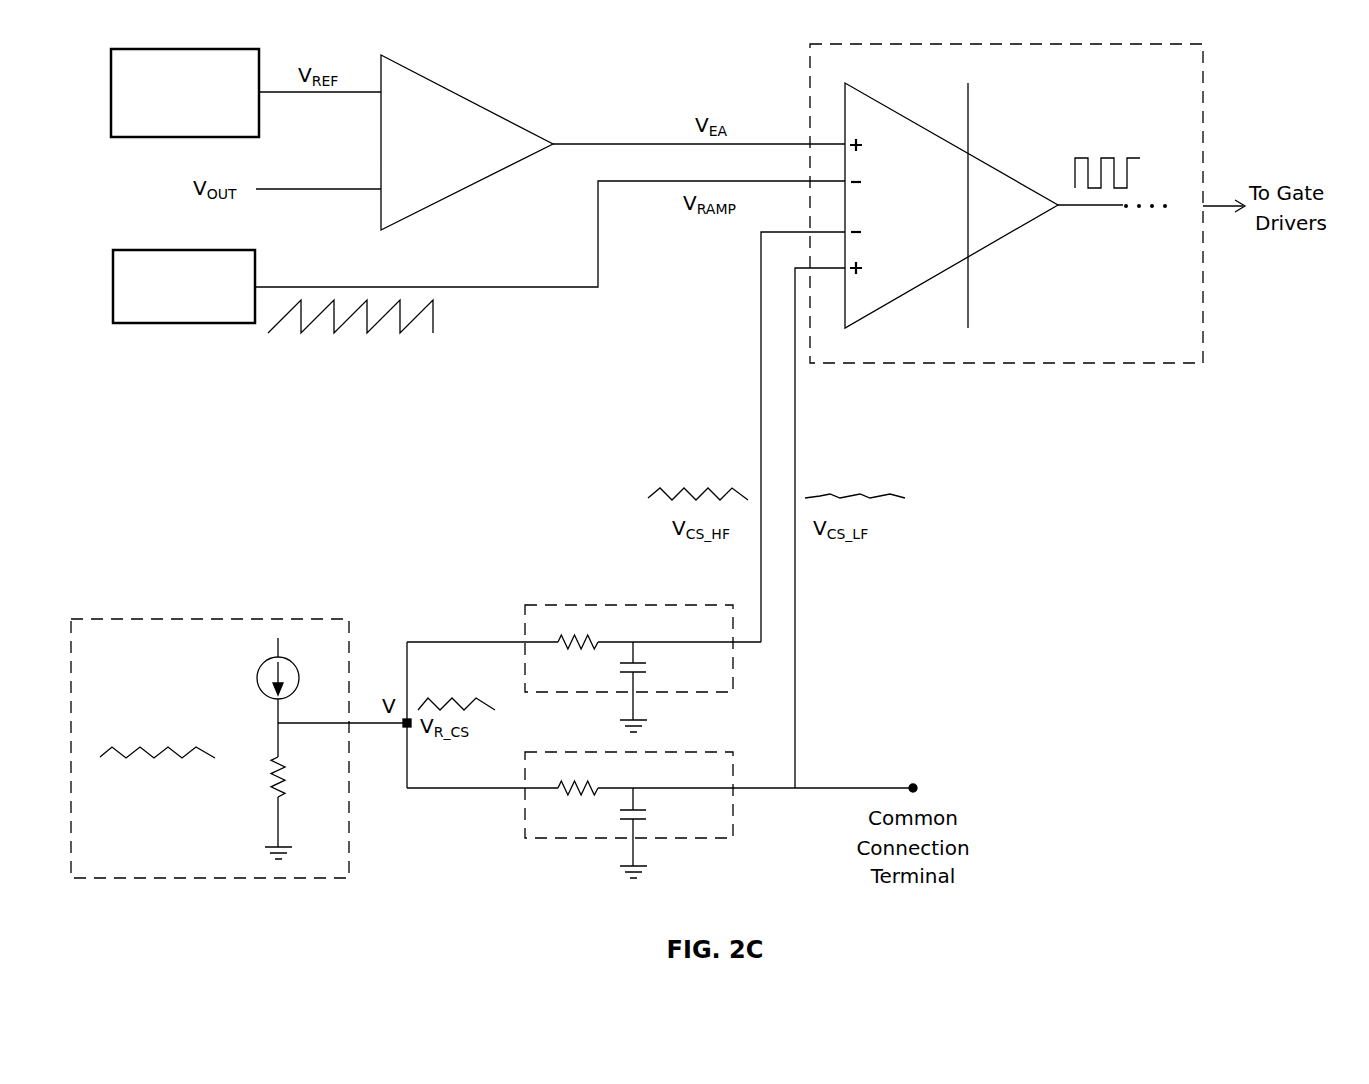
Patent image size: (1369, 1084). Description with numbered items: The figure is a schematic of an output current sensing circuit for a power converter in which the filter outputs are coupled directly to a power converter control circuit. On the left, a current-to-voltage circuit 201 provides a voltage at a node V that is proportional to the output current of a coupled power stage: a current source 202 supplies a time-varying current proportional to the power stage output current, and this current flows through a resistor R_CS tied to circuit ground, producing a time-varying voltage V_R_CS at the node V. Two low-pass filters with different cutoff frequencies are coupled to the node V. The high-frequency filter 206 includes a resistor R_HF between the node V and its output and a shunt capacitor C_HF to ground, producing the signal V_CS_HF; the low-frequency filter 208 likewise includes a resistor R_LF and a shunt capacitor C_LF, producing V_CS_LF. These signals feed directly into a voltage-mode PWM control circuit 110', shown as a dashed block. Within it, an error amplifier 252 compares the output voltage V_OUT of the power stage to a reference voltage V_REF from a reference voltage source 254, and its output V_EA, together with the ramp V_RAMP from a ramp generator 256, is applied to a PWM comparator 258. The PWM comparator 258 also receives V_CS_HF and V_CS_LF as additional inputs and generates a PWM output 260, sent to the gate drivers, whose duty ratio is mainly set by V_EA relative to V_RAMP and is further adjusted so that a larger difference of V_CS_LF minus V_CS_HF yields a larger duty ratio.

The current-to-voltage circuit 201 is at (210, 721).
The current source 202 is at (257, 683).
The high-frequency filter 206 is at (526, 604).
The low-frequency filter 208 is at (526, 840).
The error amplifier 252 is at (507, 116).
The reference voltage source 254 is at (135, 140).
The ramp generator 256 is at (145, 327).
The PWM comparator 258 is at (1008, 170).
The PWM output 260 is at (1112, 156).
The voltage-mode PWM control circuit 110' is at (1006, 240).